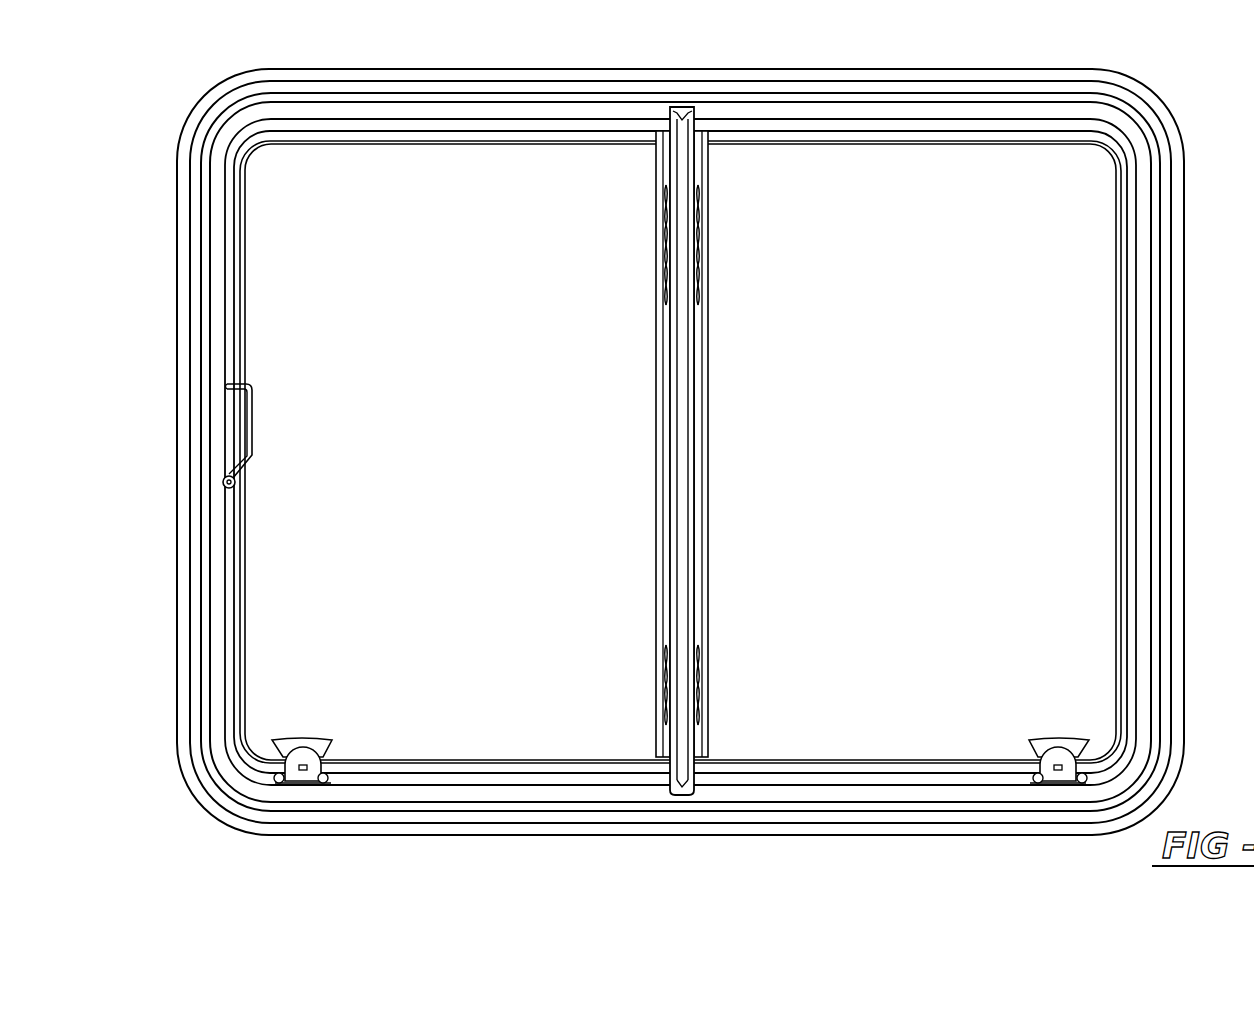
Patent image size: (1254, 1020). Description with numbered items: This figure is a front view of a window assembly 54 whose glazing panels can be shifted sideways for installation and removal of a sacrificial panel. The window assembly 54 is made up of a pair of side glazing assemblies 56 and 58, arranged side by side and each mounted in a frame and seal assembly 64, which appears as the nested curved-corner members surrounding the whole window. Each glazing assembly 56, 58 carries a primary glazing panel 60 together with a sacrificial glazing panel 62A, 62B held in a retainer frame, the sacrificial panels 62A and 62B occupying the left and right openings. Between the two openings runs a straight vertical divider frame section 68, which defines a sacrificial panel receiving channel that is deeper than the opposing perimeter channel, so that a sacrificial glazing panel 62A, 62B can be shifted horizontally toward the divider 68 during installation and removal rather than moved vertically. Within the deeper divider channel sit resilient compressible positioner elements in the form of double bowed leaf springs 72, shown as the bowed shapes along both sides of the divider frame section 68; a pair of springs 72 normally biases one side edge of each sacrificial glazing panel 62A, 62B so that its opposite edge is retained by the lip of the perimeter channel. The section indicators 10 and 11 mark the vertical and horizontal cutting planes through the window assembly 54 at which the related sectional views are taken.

The section line 10- 10 is at (341, 865).
The section line 11- 11 is at (1210, 481).
The window assembly 54 is at (565, 68).
The side glazing assembly 56 is at (583, 108).
The side glazing assembly 58 is at (848, 102).
The primary glazing panel 60 is at (252, 308).
The sacrificial glazing panel 62A is at (483, 370).
The sacrificial glazing panel 62B is at (921, 362).
The frame and seal assembly 64 is at (172, 251).
The divider frame section 68 is at (647, 360).
The double bowed leaf spring 72 is at (662, 244).